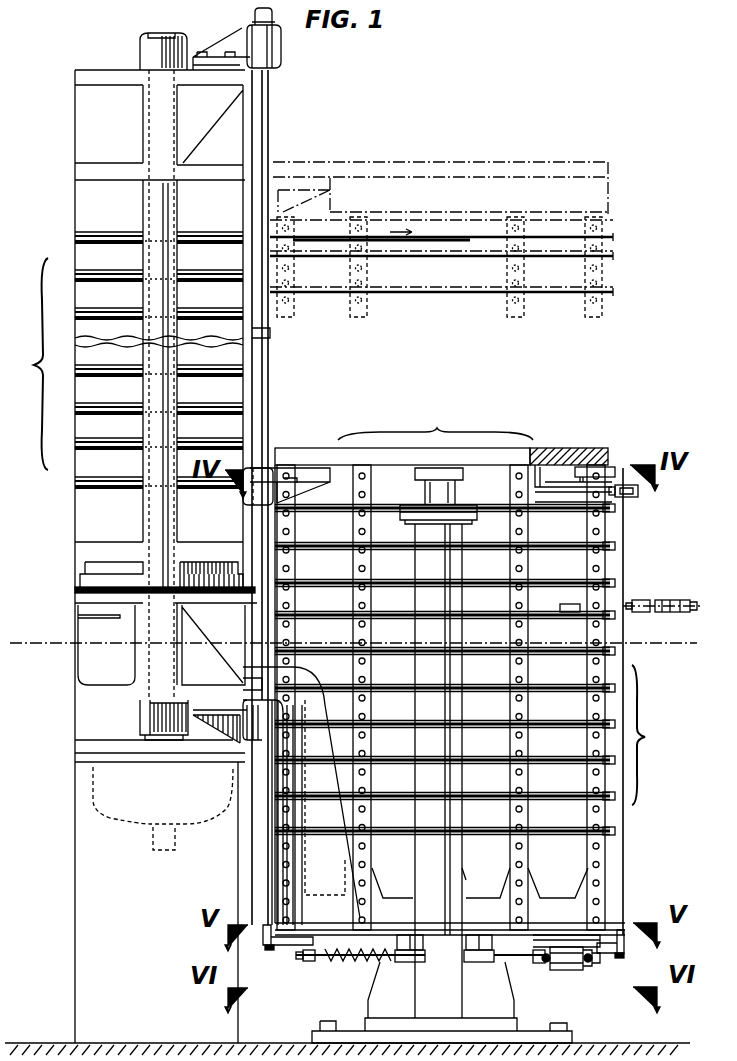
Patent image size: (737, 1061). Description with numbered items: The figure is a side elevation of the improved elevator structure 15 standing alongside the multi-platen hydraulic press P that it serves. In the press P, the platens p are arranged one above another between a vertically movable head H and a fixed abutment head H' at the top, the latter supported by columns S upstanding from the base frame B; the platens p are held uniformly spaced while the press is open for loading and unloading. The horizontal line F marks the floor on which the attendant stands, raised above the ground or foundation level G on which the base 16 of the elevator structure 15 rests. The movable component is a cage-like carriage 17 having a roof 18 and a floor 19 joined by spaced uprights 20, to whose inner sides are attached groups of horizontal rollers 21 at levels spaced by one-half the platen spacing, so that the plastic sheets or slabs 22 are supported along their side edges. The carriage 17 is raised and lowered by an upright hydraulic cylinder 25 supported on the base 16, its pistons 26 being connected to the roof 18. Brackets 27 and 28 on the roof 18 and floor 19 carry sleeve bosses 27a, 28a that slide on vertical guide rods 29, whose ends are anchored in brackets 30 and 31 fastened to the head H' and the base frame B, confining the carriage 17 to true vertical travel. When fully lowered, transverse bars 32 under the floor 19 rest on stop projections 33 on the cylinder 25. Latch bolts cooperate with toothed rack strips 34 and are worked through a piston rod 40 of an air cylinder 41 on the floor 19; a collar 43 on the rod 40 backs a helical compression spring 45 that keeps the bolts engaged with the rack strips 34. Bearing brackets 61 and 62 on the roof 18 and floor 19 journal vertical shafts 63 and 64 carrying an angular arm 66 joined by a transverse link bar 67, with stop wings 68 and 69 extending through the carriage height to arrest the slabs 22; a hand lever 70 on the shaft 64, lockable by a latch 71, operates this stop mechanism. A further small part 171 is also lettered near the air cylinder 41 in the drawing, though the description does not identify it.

The elevator structure 15 is at (433, 163).
The base 16 is at (528, 1030).
The carriage 17 is at (472, 691).
The roof 18 is at (592, 455).
The floor 19 is at (550, 930).
The uprights 20 is at (350, 317).
The rollers 21 is at (352, 290).
The plastic sheets or slabs 22 is at (113, 313).
The hydraulic cylinder 25 is at (443, 898).
The pistons 26 is at (424, 485).
The bracket 27 is at (301, 468).
The sleeve boss 27a is at (250, 488).
The bracket 28 is at (301, 796).
The sleeve boss 28a is at (243, 672).
The vertical guide rods 29 is at (270, 333).
The bracket 30 is at (273, 45).
The bracket 31 is at (250, 728).
The transverse bars 32 is at (400, 937).
The stop projections 33 is at (402, 962).
The toothed rack strips 34 is at (543, 965).
The piston rod 40 is at (525, 958).
The air cylinder 41 is at (572, 970).
The collar 43 is at (312, 961).
The helical compression spring 45 is at (348, 960).
The bearing bracket 61 is at (612, 470).
The bearing bracket 62 is at (264, 938).
The vertical shaft 63 is at (268, 951).
The vertical shaft 64 is at (624, 955).
The angular arm 66 is at (635, 492).
The transverse link bar 67 is at (573, 483).
The stop wing 68 is at (271, 820).
The stop wing 69 is at (624, 828).
The hand lever 70 is at (566, 608).
The latch 71 is at (682, 611).
The coupling 171 is at (592, 960).
The base frame B is at (80, 621).
The floor line F is at (353, 631).
The ground or foundation level G is at (634, 1048).
The vertically movable head H is at (149, 556).
The fixed abutment head H' is at (134, 55).
The hydraulic press P is at (31, 364).
The platens p is at (78, 256).
The columns S is at (148, 507).